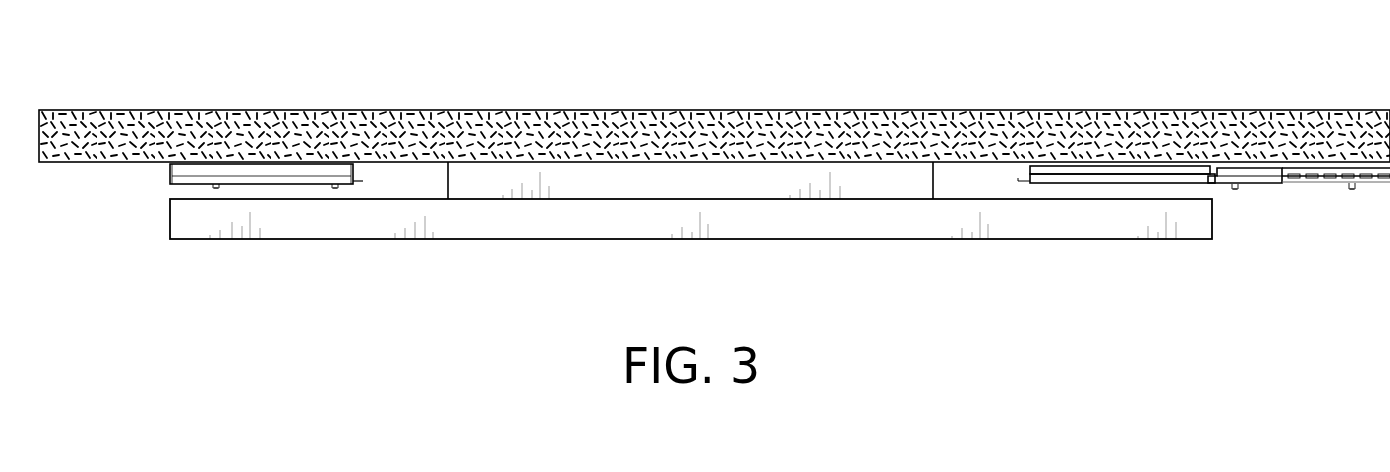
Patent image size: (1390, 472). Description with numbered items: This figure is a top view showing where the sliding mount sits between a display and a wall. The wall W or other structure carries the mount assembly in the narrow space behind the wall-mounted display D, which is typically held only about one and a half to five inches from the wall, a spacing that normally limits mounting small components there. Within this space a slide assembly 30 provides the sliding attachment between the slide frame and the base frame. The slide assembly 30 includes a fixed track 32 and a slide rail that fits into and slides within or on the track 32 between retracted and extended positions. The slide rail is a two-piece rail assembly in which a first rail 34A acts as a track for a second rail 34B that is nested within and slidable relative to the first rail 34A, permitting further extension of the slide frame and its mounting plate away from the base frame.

The wall W is at (777, 118).
The display D is at (863, 218).
The slide assembly 30 is at (1151, 164).
The fixed track 32 is at (1193, 181).
The first rail 34A is at (1238, 178).
The second rail 34B is at (1362, 185).